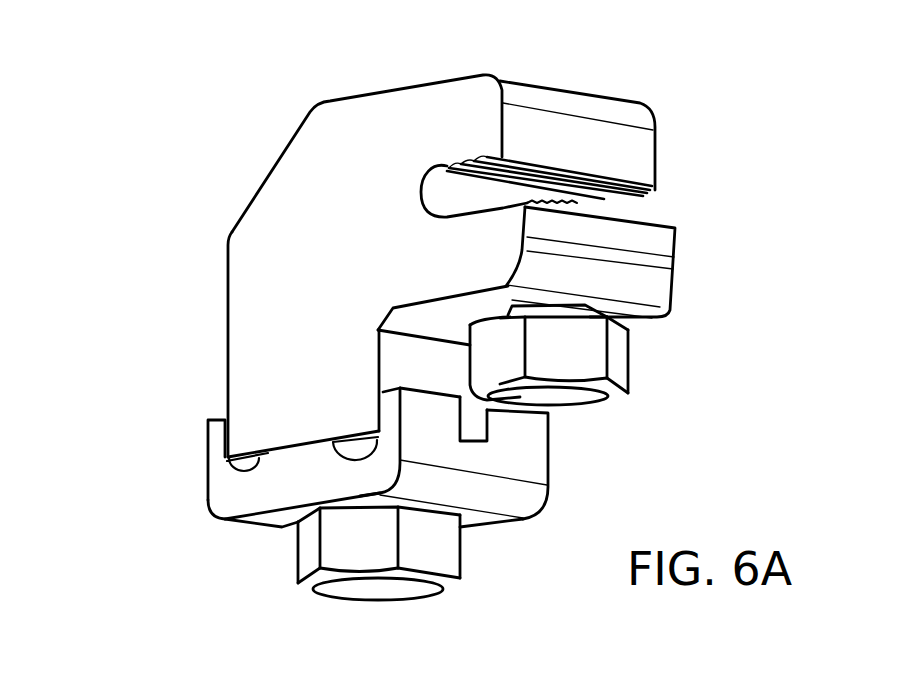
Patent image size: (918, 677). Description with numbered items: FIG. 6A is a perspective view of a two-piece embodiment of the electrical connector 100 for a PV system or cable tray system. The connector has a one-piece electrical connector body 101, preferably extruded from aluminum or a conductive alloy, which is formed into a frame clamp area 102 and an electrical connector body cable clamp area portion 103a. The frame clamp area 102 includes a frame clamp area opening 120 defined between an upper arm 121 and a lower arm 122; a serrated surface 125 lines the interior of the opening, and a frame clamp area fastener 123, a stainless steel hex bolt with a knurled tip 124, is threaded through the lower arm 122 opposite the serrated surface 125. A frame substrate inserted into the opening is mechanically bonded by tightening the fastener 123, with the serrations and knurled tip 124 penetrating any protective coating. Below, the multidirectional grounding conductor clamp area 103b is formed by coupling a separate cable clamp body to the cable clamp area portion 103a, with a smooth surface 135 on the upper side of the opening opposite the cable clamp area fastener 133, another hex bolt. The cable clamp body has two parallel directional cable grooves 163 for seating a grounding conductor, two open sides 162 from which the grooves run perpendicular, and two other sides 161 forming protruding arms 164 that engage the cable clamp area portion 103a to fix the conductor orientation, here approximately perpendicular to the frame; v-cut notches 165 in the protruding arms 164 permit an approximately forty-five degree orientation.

The electrical connector 100 is at (262, 188).
The electrical connector body 101 is at (340, 128).
The frame clamp area 102 is at (258, 292).
The electrical connector body cable clamp area portion 103a is at (405, 357).
The multidirectional grounding conductor clamp area 103b is at (582, 450).
The frame clamp area opening 120 is at (647, 200).
The upper arm 121 is at (588, 124).
The lower arm 122 is at (630, 295).
The frame clamp area fastener 123 is at (620, 362).
The knurled tip 124 is at (580, 205).
The serrated surface 125 is at (472, 158).
The cable clamp area fastener 133 is at (350, 594).
The smooth surface 135 is at (228, 483).
The sides 161 is at (523, 438).
The open sides 162 is at (300, 450).
The directional cable grooves 163 is at (262, 458).
The protruding arms 164 is at (438, 450).
The v-cut notches 165 is at (474, 432).